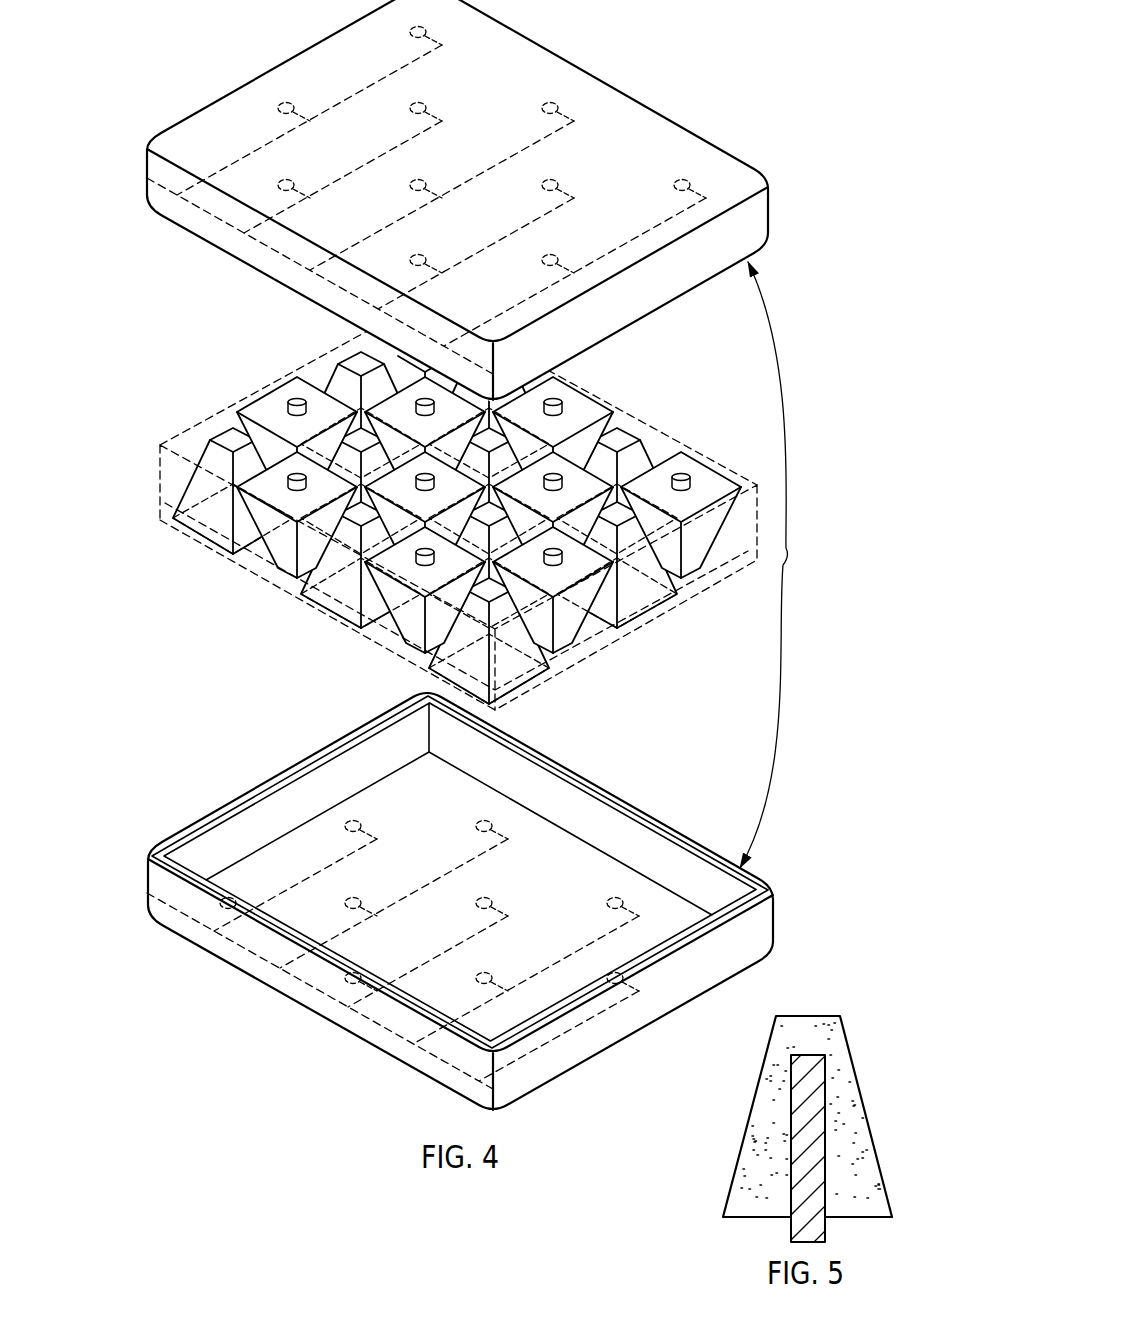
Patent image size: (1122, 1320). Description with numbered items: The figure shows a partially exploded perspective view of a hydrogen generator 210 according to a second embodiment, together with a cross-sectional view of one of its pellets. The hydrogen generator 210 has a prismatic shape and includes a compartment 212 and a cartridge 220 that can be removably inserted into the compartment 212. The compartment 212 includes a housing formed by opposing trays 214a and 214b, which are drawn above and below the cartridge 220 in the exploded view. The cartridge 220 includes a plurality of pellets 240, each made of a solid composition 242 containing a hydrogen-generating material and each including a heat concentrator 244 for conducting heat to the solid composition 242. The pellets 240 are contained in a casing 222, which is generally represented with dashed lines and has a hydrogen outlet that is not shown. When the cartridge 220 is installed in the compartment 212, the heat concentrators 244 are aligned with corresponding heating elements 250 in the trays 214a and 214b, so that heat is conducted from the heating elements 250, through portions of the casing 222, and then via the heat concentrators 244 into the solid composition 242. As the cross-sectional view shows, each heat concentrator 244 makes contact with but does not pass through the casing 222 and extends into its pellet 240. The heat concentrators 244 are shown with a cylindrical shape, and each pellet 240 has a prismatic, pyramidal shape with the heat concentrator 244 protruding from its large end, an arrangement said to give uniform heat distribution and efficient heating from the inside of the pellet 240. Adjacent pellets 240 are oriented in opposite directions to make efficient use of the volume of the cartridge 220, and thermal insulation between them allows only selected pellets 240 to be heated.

In FIG. 4, the hydrogen generator 210 is at (429, 555).
In FIG. 4, the compartment 212 is at (784, 565).
In FIG. 4, the tray 214a is at (560, 68).
In FIG. 4, the tray 214b is at (652, 820).
In FIG. 4, the cartridge 220 is at (465, 508).
In FIG. 4, the casing 222 is at (590, 658).
In FIG. 4, the pellet 240 is at (585, 410).
In FIG. 5, the pellet 240 is at (798, 1117).
In FIG. 4, the solid composition 242 is at (328, 597).
In FIG. 5, the solid composition 242 is at (758, 1134).
In FIG. 4, the heat concentrator 244 is at (688, 475).
In FIG. 5, the heat concentrator 244 is at (783, 1227).
In FIG. 4, the heating element 250 is at (282, 100).